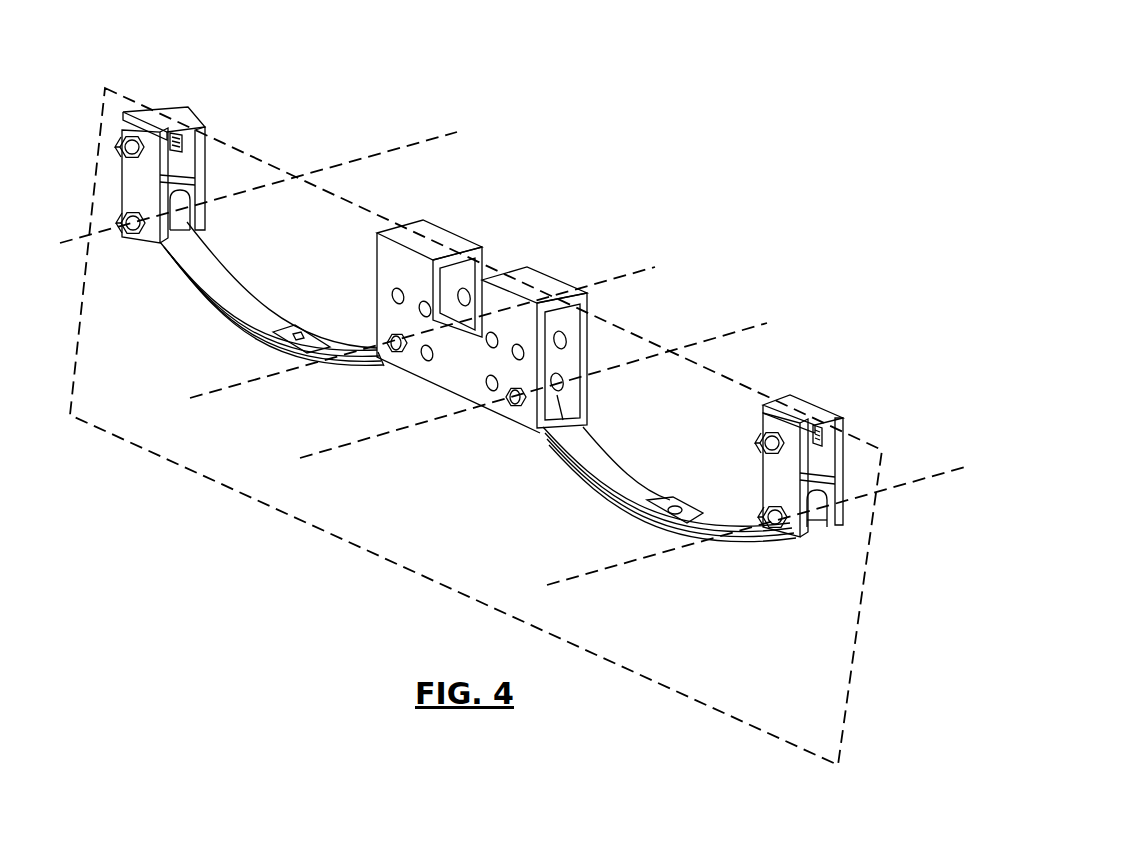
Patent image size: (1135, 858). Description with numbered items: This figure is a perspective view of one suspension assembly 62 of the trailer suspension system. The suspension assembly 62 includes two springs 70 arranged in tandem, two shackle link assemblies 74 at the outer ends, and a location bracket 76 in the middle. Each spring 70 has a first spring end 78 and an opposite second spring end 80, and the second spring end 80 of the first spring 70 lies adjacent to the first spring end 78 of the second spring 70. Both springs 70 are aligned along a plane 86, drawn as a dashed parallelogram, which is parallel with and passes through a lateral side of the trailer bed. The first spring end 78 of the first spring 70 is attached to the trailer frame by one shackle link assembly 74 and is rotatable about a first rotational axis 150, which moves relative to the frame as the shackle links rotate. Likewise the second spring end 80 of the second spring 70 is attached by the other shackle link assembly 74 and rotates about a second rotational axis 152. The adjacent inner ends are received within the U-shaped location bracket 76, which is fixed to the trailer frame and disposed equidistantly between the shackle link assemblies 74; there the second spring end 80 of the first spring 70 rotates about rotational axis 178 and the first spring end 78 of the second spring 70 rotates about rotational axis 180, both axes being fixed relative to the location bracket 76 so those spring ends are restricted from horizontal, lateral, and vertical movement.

The suspension assembly 62 is at (596, 166).
The spring 70 is at (223, 325).
The shackle link assembly 74 is at (150, 90).
The location bracket 76 is at (440, 233).
The first spring end 78 is at (170, 223).
The second spring end 80 is at (390, 377).
The plane 86 is at (852, 670).
The first rotational axis 150 is at (457, 132).
The second rotational axis 152 is at (950, 462).
The rotational axis 178 is at (655, 267).
The rotational axis 180 is at (767, 323).